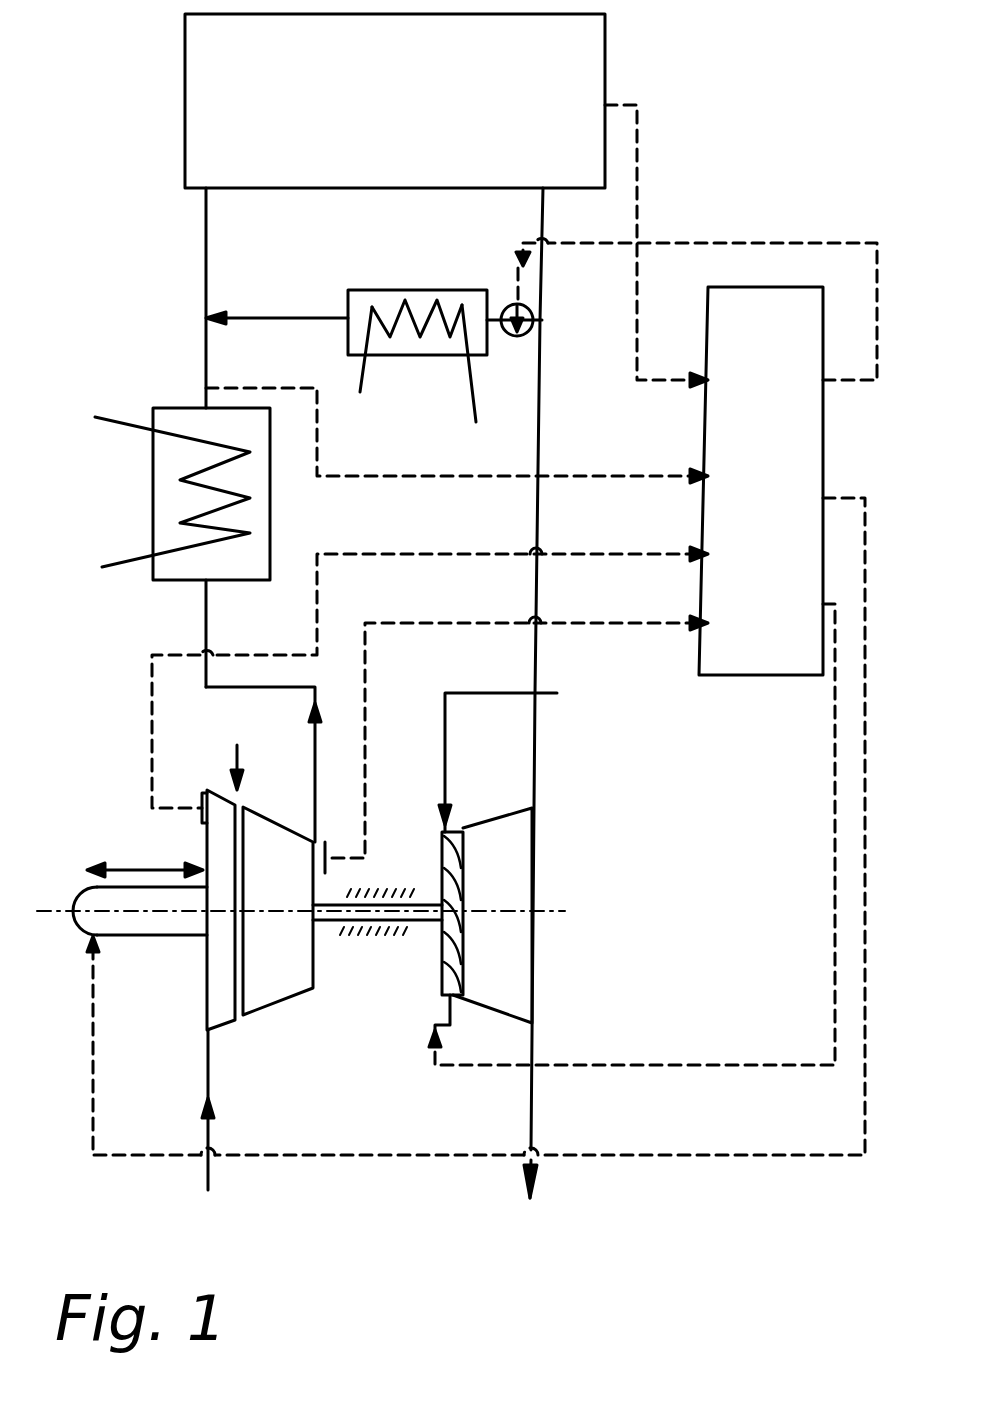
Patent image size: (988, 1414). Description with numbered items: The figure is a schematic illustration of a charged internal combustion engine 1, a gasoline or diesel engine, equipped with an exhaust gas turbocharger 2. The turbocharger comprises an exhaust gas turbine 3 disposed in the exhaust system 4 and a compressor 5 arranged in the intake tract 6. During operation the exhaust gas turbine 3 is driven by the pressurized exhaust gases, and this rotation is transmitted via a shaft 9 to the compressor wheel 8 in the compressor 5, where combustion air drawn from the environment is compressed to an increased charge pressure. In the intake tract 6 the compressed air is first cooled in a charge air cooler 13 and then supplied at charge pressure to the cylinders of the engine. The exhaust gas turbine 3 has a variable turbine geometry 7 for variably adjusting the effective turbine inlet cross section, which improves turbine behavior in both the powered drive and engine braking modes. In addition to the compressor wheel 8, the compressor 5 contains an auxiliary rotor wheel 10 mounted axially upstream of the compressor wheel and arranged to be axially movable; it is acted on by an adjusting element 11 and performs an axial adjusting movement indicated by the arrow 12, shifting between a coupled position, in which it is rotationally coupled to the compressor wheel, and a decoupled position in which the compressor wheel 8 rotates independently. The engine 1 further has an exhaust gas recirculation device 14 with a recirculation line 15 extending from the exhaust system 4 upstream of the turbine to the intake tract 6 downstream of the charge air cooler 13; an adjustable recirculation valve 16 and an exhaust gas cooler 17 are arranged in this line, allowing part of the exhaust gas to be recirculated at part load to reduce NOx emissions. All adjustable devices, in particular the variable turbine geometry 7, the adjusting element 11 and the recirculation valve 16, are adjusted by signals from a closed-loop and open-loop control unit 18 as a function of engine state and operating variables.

The internal combustion engine 1 is at (398, 135).
The exhaust gas turbocharger 2 is at (374, 975).
The exhaust gas turbine 3 is at (510, 862).
The exhaust system 4 is at (557, 693).
The compressor 5 is at (237, 747).
The intake tract 6 is at (206, 622).
The variable turbine geometry 7 is at (442, 855).
The compressor wheel 8 is at (290, 988).
The shaft 9 is at (428, 915).
The auxiliary rotor wheel 10 is at (217, 997).
The adjusting element 11 is at (84, 904).
The arrow 12 is at (162, 867).
The charge air cooler 13 is at (172, 490).
The exhaust gas recirculation device 14 is at (364, 282).
The recirculation line 15 is at (304, 308).
The recirculation valve 16 is at (517, 338).
The exhaust gas cooler 17 is at (413, 345).
The closed-loop and open-loop control unit 18 is at (782, 511).